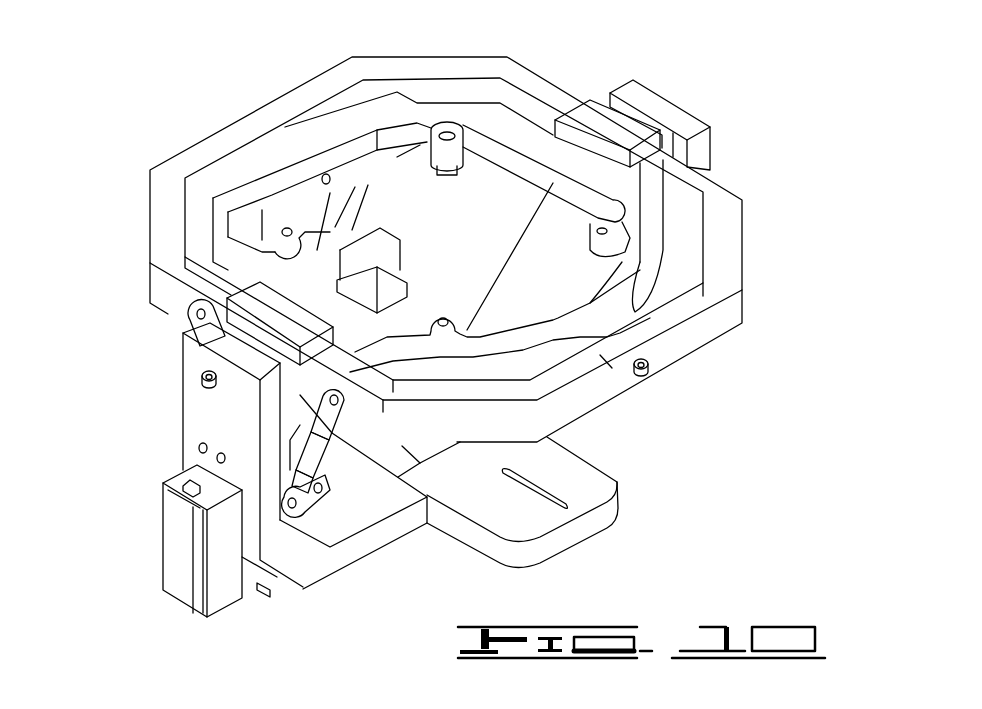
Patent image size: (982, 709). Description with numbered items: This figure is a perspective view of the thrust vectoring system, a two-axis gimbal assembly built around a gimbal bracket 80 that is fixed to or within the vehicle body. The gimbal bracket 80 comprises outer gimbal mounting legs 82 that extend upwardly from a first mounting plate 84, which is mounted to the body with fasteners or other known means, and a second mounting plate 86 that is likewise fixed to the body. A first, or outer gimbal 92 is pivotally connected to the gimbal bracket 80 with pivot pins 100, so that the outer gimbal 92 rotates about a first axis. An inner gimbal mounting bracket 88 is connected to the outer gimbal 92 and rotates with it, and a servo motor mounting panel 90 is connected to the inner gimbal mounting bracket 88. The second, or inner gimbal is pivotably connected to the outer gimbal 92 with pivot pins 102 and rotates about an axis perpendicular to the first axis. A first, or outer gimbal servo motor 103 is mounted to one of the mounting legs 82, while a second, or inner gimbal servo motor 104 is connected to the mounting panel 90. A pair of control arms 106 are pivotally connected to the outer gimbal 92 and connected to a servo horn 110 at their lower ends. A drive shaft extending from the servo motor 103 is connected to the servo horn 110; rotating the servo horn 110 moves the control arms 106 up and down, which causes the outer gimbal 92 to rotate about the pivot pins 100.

The gimbal bracket 80 is at (660, 103).
The outer gimbal mounting legs 82 is at (182, 445).
The first mounting plate 84 is at (333, 563).
The second mounting plate 86 is at (595, 528).
The inner gimbal mounting bracket 88 is at (352, 238).
The servo motor mounting panel 90 is at (365, 245).
The outer gimbal 92 is at (342, 77).
The pivot pins 100 is at (207, 378).
The pivot pins 102 is at (650, 373).
The outer gimbal servo motor 103 is at (163, 540).
The inner gimbal servo motor 104 is at (360, 292).
The control arms 106 is at (297, 435).
The servo horn 110 is at (327, 507).